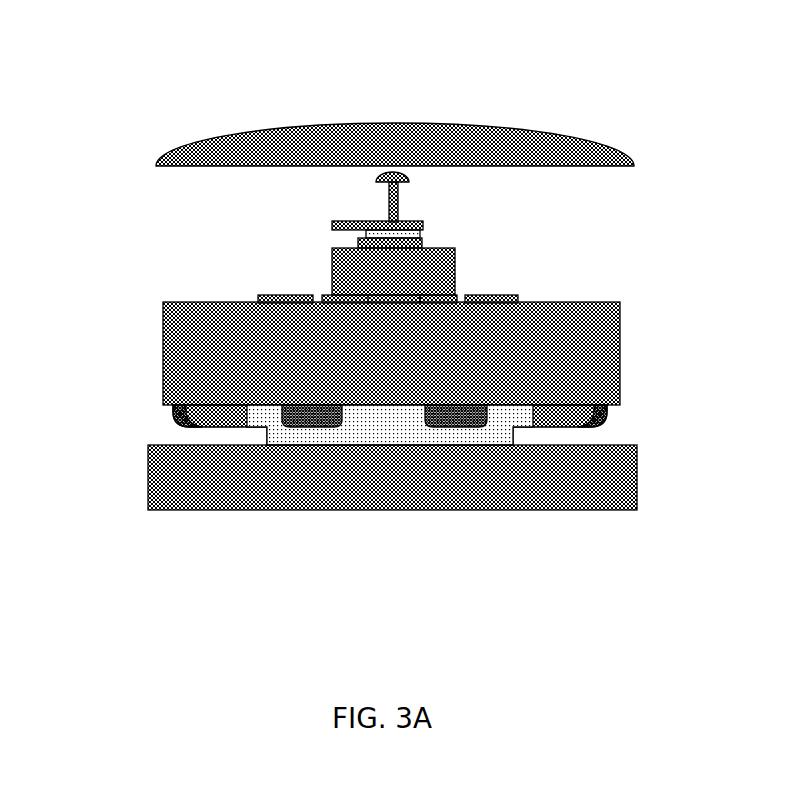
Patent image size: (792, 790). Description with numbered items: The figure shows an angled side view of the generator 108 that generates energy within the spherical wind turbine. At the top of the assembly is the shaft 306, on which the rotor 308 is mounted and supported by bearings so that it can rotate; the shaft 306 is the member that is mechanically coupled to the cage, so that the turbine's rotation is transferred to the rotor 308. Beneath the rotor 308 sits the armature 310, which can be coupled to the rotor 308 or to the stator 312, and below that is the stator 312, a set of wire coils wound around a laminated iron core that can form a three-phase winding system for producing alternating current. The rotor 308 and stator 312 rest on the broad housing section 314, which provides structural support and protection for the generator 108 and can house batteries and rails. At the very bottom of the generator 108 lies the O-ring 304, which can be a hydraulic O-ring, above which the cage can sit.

The generator 108 is at (167, 72).
The O-ring 304 is at (646, 477).
The shaft 306 is at (379, 201).
The rotor 308 is at (426, 232).
The armature 310 is at (424, 241).
The stator 312 is at (317, 261).
The housing section 314 is at (631, 342).